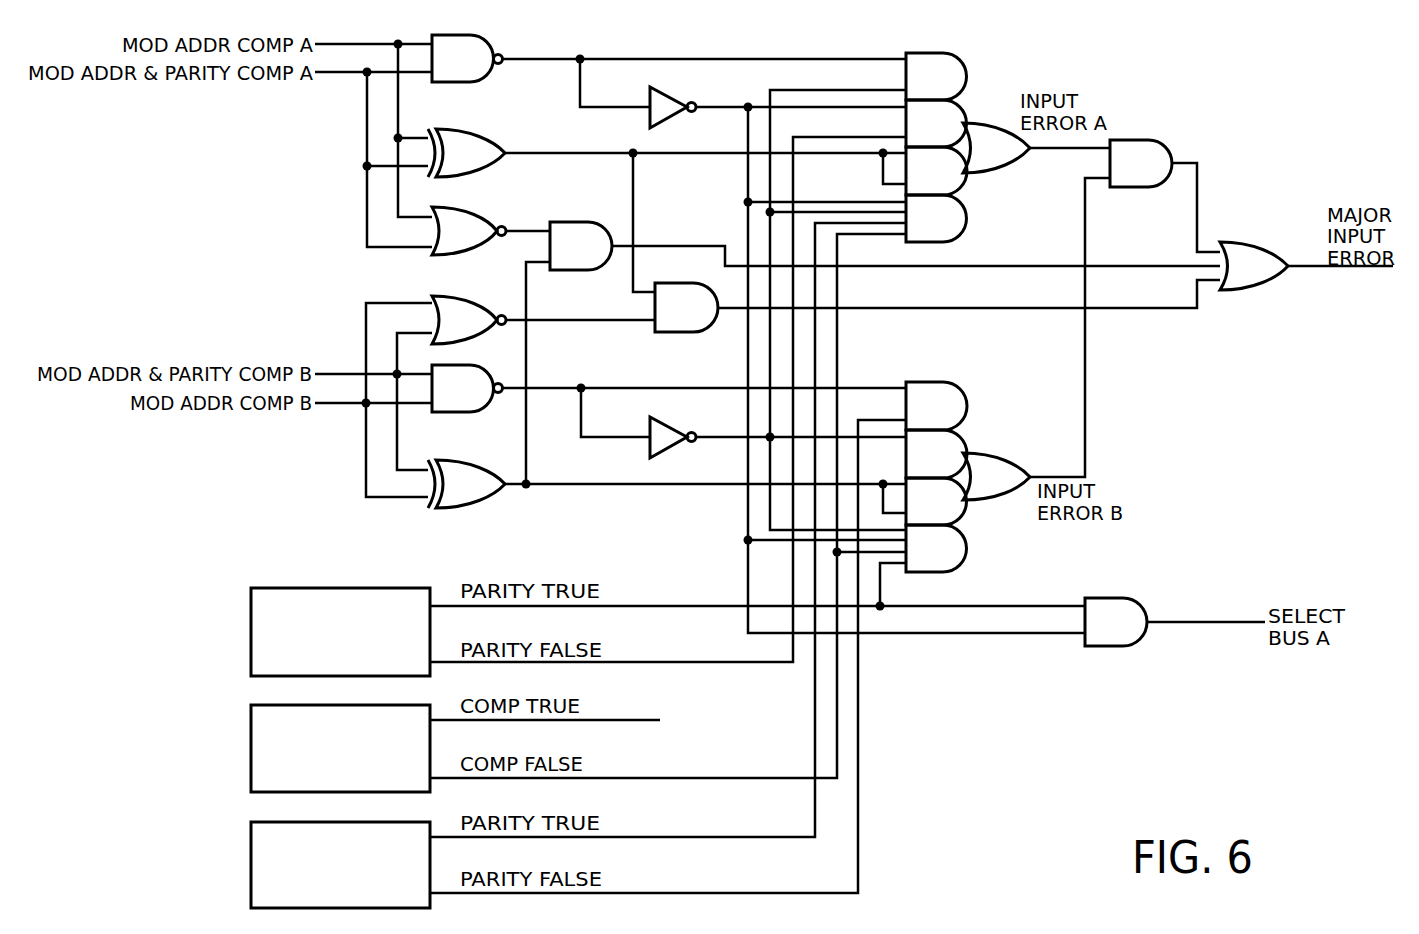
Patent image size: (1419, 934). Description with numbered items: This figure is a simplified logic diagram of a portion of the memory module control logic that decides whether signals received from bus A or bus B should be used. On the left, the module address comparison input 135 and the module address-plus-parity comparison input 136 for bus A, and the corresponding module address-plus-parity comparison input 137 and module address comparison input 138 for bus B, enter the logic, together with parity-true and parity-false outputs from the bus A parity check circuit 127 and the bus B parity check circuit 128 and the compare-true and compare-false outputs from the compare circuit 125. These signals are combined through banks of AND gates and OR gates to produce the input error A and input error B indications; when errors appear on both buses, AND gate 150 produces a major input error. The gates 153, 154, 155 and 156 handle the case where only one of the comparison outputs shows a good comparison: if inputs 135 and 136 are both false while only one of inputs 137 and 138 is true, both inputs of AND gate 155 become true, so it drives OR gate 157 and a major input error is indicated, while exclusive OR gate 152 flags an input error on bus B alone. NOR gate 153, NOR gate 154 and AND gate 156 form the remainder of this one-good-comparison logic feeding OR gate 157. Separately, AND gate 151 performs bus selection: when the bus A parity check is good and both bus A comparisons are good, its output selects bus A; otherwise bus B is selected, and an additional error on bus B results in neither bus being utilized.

The compare circuit 125 is at (251, 753).
The bus A parity check circuit 127 is at (251, 642).
The bus B parity check circuit 128 is at (251, 875).
The module address comparison input for bus A 135 is at (343, 43).
The module address-plus-parity comparison input for bus A 136 is at (350, 73).
The module address-plus-parity comparison input for bus B 137 is at (343, 371).
The module address comparison input for bus B 138 is at (342, 405).
The AND gate 150 is at (1140, 140).
The AND gate 151 is at (1100, 647).
The exclusive OR gate 152 is at (472, 508).
The NOR gate 153 is at (505, 196).
The NOR gate 154 is at (478, 296).
The AND gate 155 is at (584, 222).
The AND gate 156 is at (682, 332).
The OR gate 157 is at (1250, 242).